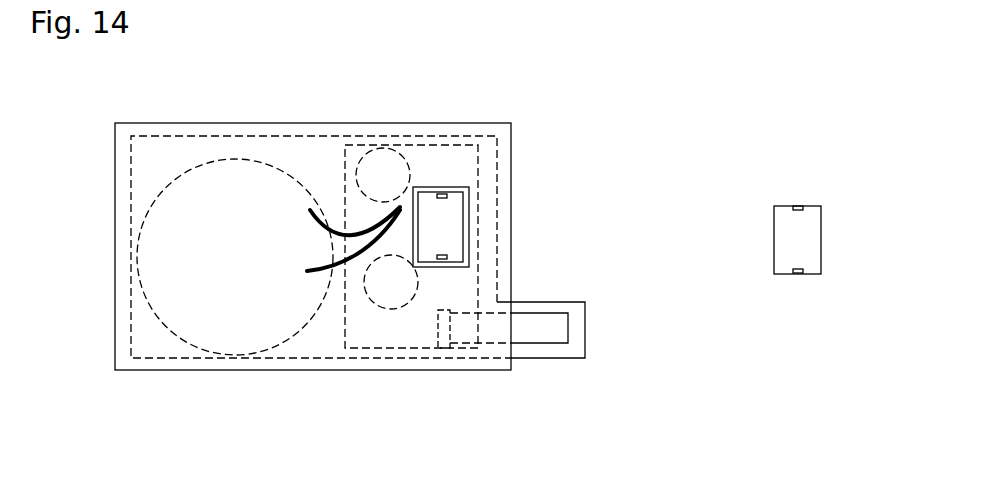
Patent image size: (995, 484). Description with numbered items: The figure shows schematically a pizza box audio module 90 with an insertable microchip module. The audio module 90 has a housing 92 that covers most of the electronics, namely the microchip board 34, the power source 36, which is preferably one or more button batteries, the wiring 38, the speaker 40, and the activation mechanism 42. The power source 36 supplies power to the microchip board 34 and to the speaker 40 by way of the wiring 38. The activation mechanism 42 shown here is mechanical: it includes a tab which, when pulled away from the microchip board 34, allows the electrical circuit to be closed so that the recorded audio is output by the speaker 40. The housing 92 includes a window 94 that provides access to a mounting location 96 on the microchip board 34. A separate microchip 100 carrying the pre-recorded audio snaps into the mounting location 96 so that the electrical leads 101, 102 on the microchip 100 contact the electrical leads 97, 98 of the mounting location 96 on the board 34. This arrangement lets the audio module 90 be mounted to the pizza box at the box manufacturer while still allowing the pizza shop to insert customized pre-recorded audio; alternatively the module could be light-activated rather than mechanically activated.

The pizza box audio module 90 is at (614, 94).
The housing 92 is at (117, 211).
The microchip board 34 is at (410, 328).
The power source 36 is at (392, 172).
The wiring 38 is at (380, 248).
The speaker 40 is at (203, 290).
The activation mechanism 42 is at (473, 325).
The window 94 is at (468, 207).
The mounting location 96 is at (452, 228).
The electrical lead 97 is at (448, 257).
The electrical lead 98 is at (443, 195).
The microchip 100 is at (776, 239).
The electrical lead 101 is at (800, 205).
The electrical lead 102 is at (798, 275).